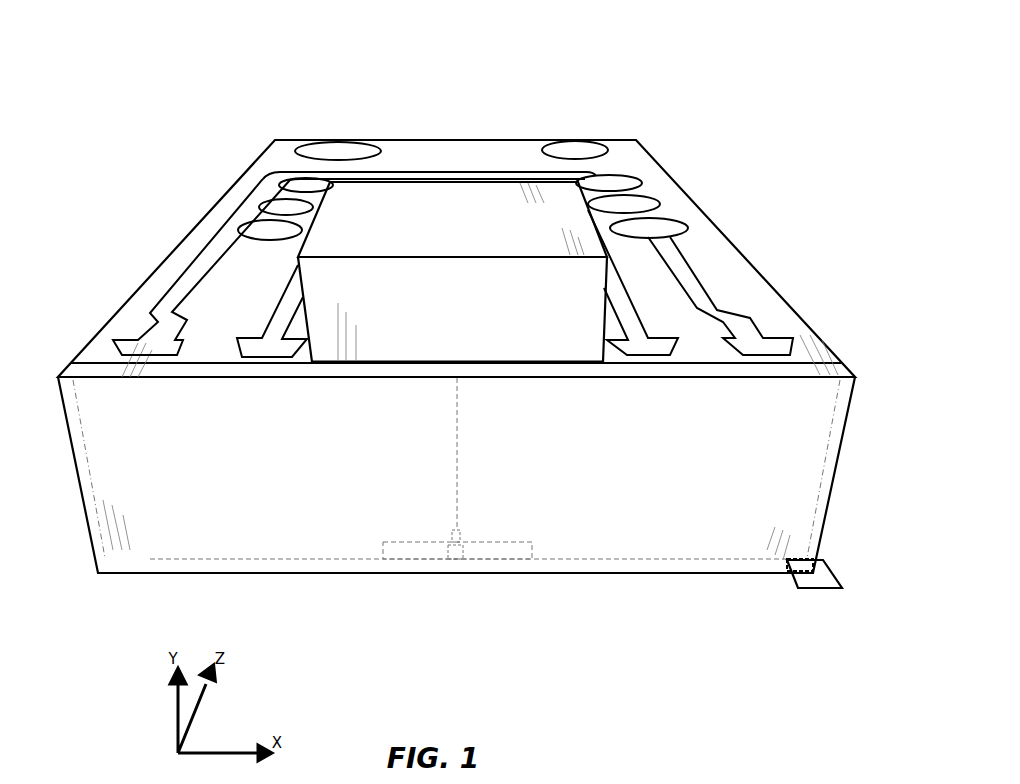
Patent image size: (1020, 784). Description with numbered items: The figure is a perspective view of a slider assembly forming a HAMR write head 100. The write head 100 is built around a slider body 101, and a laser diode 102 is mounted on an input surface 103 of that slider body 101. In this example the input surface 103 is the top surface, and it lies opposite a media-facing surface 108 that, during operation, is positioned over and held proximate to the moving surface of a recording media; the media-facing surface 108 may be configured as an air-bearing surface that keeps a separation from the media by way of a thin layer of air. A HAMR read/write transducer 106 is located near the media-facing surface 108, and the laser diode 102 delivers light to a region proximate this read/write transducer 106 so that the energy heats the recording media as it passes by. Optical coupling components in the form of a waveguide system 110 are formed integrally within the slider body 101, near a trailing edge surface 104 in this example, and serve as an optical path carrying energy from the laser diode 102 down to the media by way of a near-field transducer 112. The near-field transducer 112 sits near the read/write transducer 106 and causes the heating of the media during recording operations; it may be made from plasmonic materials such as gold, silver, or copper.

The HAMR write head 100 is at (444, 355).
The slider body 101 is at (250, 167).
The laser diode 102 is at (410, 193).
The input surface 103 is at (127, 322).
The trailing edge surface 104 is at (158, 548).
The HAMR read/write transducer 106 is at (463, 558).
The media-facing surface 108 is at (833, 590).
The waveguide system 110 is at (457, 450).
The near-field transducer 112 is at (452, 560).